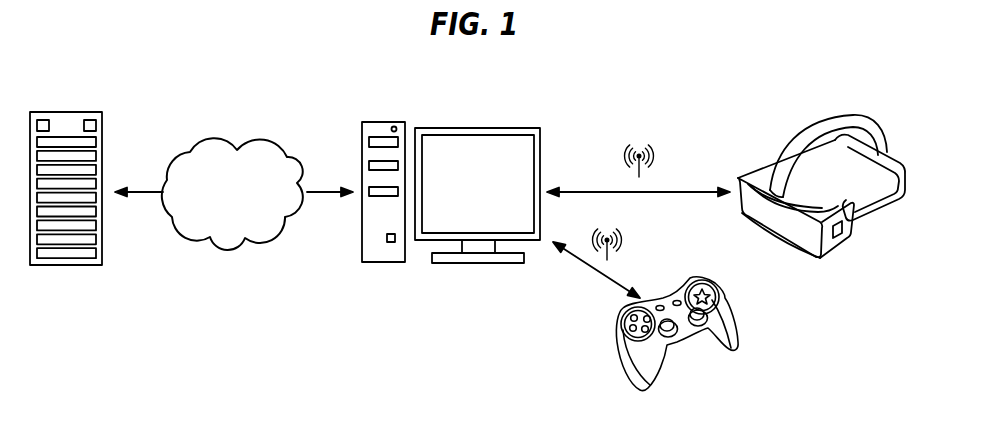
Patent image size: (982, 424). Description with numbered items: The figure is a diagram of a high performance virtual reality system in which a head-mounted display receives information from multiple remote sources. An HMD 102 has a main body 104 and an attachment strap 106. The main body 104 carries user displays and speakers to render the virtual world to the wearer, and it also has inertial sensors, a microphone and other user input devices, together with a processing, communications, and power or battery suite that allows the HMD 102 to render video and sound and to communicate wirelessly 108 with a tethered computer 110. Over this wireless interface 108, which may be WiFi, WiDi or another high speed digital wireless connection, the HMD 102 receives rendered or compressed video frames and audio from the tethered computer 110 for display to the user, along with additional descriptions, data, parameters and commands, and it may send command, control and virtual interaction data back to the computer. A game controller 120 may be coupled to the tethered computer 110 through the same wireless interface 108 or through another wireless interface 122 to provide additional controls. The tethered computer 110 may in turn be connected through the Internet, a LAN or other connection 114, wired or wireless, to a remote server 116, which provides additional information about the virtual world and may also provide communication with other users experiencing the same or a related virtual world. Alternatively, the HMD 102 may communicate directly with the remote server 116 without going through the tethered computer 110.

The HMD 102 is at (842, 213).
The main body 104 is at (765, 228).
The attachment strap 106 is at (888, 140).
The wireless interface 108 is at (692, 190).
The tethered computer 110 is at (510, 105).
The connection 114 is at (225, 138).
The remote server 116 is at (122, 124).
The game controller 120 is at (630, 353).
The wireless interface 122 is at (592, 267).